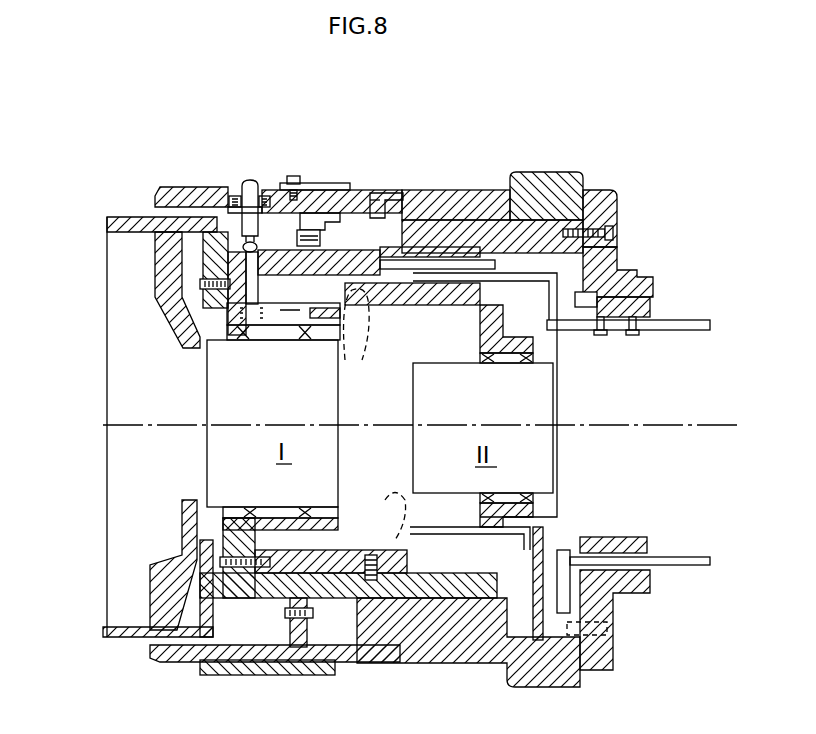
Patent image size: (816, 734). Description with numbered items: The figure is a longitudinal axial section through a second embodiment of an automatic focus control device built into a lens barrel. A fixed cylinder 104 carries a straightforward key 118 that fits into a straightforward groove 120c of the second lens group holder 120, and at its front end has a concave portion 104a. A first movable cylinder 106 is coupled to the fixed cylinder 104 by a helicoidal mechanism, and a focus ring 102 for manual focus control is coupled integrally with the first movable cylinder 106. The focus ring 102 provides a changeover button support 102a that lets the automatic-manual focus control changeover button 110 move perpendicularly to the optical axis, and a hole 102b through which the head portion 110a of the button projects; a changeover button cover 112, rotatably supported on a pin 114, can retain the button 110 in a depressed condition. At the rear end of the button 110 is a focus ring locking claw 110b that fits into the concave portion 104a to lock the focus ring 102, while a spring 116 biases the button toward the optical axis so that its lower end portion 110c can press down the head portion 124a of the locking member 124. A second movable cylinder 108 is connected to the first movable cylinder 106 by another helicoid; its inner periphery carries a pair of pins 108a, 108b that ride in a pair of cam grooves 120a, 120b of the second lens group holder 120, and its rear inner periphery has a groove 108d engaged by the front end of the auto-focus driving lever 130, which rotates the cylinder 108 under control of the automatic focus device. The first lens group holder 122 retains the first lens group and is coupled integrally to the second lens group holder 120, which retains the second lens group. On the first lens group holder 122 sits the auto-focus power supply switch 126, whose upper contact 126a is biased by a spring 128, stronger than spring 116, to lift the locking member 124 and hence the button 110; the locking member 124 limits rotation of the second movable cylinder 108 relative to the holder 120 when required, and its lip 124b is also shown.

The focus ring 102 is at (175, 190).
The changeover button support 102a is at (372, 200).
The hole 102b is at (230, 192).
The fixed cylinder 104 is at (548, 172).
The concave portion 104a is at (385, 237).
The first movable cylinder 106 is at (584, 192).
The second movable cylinder 108 is at (585, 180).
The pin 108a is at (363, 303).
The pin 108b is at (365, 555).
The groove 108d is at (490, 266).
The automatic-manual focus control changeover button 110 is at (292, 181).
The head portion 110a is at (258, 192).
The focus ring locking claw 110b is at (380, 197).
The lower end portion 110c is at (240, 243).
The changeover button cover 112 is at (345, 186).
The pin 114 is at (317, 205).
The spring 116 is at (232, 242).
The straightforward key 118 is at (540, 545).
The second lens group holder 120 is at (553, 345).
The cam groove 120a is at (480, 340).
The cam groove 120b is at (482, 512).
The straightforward groove 120c is at (462, 550).
The first lens group holder 122 is at (223, 527).
The locking member 124 is at (210, 300).
The head portion 124a is at (217, 250).
The diaphragm lip 124b is at (382, 324).
The auto-focus power supply switch 126 is at (335, 345).
The upper contact 126a is at (215, 345).
The spring 128 is at (250, 330).
The auto-focus driving lever 130 is at (697, 320).